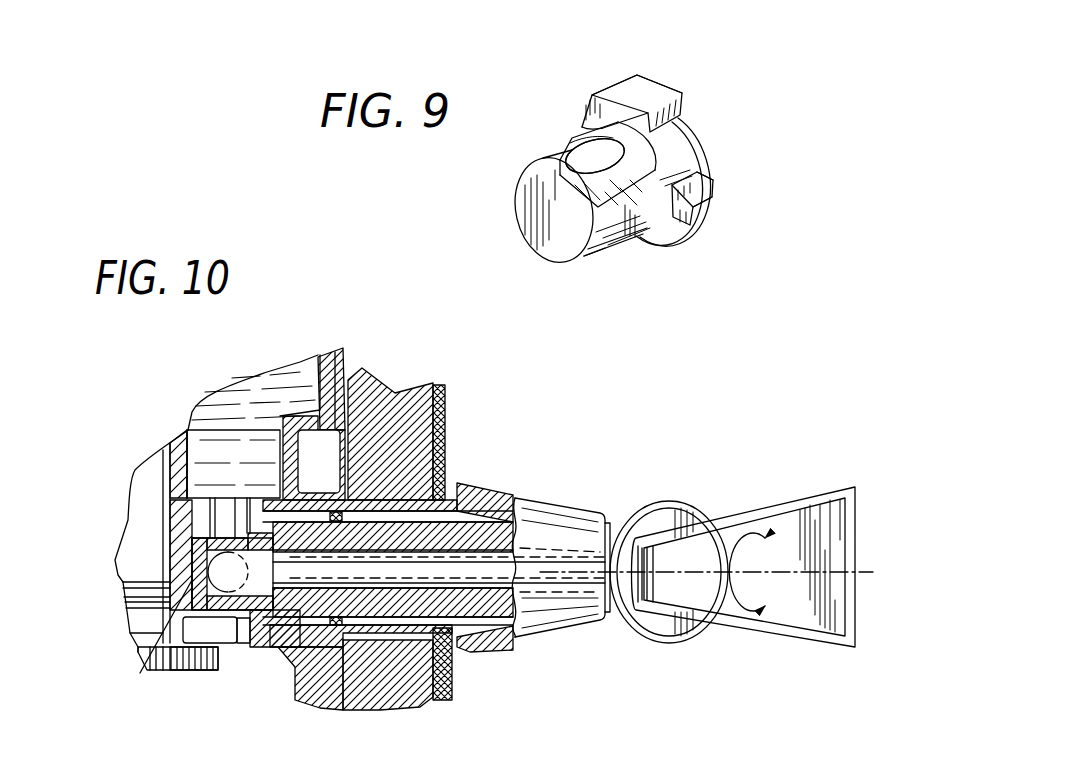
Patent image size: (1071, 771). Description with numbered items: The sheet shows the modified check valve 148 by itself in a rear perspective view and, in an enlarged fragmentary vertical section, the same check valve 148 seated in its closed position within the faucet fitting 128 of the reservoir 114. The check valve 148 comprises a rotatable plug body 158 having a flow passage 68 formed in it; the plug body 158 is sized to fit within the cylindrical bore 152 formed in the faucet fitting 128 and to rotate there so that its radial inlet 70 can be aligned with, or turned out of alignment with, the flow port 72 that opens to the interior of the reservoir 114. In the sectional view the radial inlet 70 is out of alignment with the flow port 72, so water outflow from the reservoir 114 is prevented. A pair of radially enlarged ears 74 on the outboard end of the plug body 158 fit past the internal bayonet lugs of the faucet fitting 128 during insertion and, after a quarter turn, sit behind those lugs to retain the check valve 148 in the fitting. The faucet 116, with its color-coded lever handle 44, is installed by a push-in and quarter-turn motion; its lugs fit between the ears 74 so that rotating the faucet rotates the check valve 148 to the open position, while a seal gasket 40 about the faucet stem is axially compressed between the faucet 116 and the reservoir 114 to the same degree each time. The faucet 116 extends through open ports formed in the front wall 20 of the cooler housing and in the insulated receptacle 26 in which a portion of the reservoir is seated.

In FIG. 10, the front wall 20 is at (447, 430).
In FIG. 10, the insulated receptacle 26 is at (398, 390).
In FIG. 10, the seal gasket 40 is at (397, 497).
In FIG. 10, the lever handle 44 is at (783, 527).
In FIG. 10, the flow passage 68 is at (263, 588).
In FIG. 9, the radial inlet 70 is at (577, 155).
In FIG. 10, the radial inlet 70 is at (220, 565).
In FIG. 10, the flow port 72 is at (213, 513).
In FIG. 9, the radially enlarged ears 74 is at (648, 92).
In FIG. 10, the reservoir 114 is at (330, 367).
In FIG. 10, the faucet 116 is at (628, 633).
In FIG. 10, the faucet fitting 128 is at (328, 647).
In FIG. 9, the check valve 148 is at (630, 252).
In FIG. 10, the check valve 148 is at (187, 584).
In FIG. 10, the cylindrical bore 152 is at (140, 673).
In FIG. 9, the rotatable plug body 158 is at (600, 243).
In FIG. 10, the rotatable plug body 158 is at (216, 668).